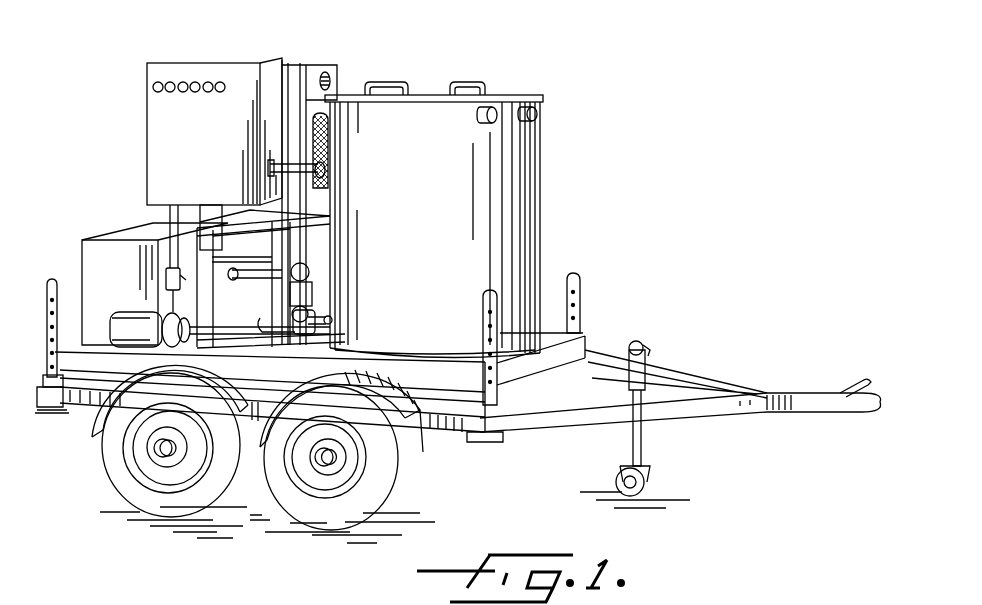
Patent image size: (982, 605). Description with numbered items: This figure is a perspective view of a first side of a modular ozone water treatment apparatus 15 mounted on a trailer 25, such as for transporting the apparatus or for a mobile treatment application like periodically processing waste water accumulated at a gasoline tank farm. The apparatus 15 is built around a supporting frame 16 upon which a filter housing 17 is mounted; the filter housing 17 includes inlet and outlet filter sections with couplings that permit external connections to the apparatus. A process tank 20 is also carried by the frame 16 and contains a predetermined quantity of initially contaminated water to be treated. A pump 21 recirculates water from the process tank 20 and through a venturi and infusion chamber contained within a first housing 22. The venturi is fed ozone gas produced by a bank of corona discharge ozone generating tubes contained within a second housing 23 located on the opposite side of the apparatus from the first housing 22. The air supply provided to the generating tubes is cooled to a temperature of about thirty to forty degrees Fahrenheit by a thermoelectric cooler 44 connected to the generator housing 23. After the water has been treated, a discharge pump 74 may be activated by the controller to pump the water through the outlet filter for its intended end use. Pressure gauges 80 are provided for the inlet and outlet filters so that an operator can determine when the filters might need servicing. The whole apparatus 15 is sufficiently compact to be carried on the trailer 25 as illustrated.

The modular ozone water treatment apparatus 15 is at (546, 52).
The supporting frame 16 is at (590, 344).
The filter housing 17 is at (116, 226).
The process tank 20 is at (536, 191).
The pump 21 is at (112, 320).
The first housing 22 is at (160, 148).
The second housing 23 is at (315, 60).
The trailer 25 is at (709, 419).
The thermoelectric cooler 44 is at (302, 102).
The discharge pump 74 is at (262, 325).
The pressure gauges 80 is at (199, 82).